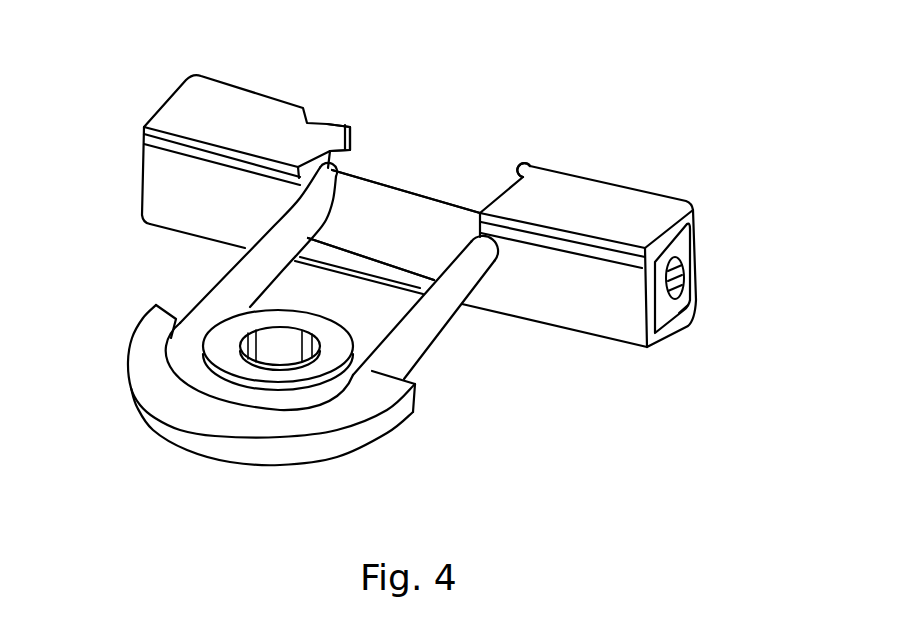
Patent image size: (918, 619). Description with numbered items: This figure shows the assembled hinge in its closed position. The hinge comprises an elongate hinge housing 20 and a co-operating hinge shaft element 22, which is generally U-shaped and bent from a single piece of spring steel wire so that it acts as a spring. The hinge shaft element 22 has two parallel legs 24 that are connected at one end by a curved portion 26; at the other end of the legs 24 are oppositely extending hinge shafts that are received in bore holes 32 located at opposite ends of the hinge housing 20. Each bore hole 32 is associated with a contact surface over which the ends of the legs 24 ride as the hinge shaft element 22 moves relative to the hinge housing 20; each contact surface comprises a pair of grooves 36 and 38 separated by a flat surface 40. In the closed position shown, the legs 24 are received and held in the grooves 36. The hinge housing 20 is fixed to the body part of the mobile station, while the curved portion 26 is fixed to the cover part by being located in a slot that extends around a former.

The hinge housing 20 is at (590, 200).
The hinge shaft element 22 is at (417, 374).
The legs 24 is at (223, 296).
The curved portion 26 is at (197, 407).
The bore holes 32 is at (684, 284).
The grooves 36 is at (292, 198).
The grooves 38 is at (303, 110).
The flat surface 40 is at (331, 165).